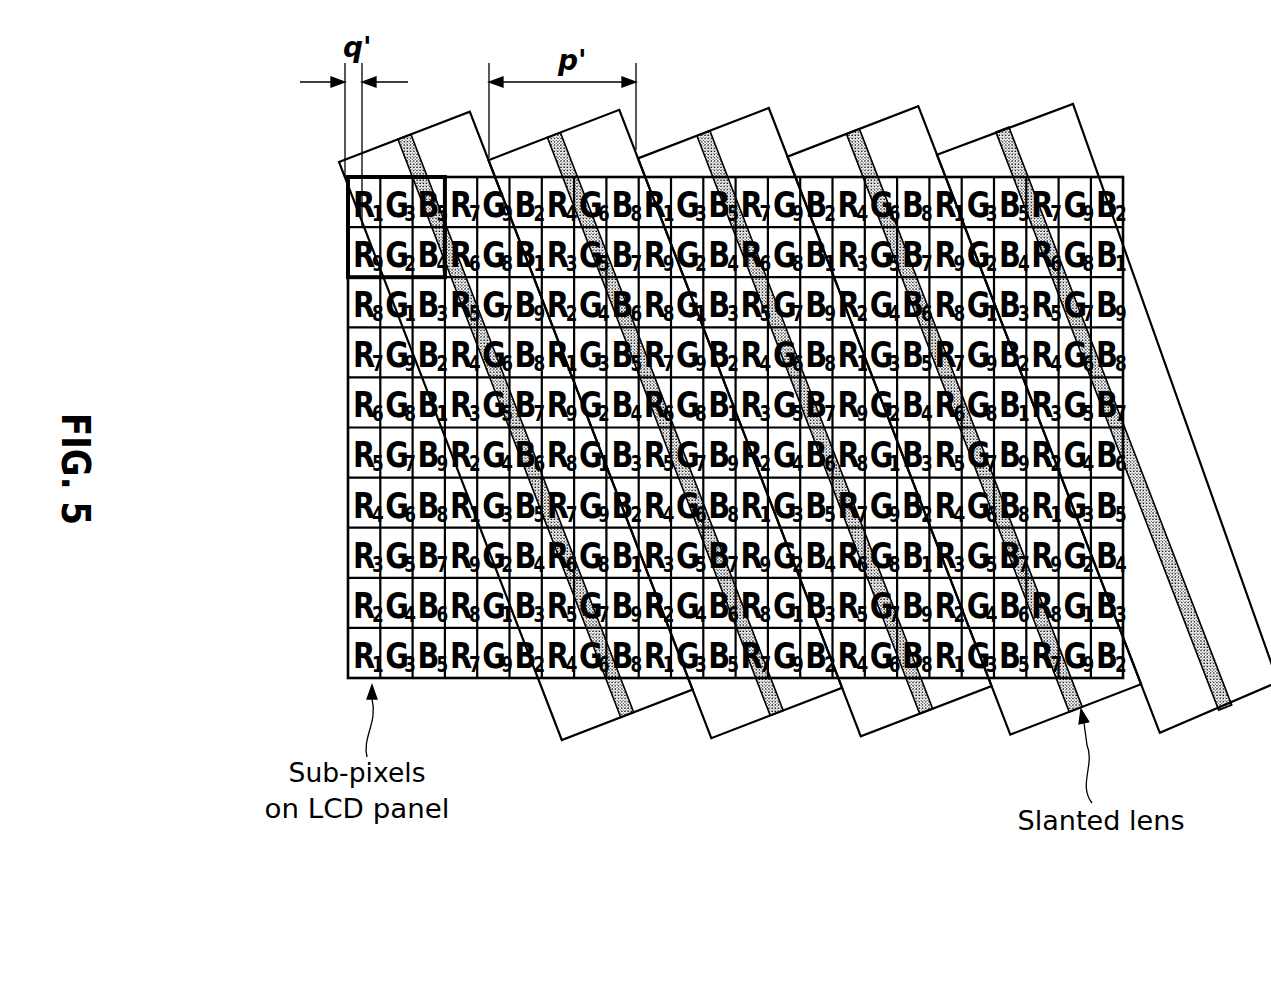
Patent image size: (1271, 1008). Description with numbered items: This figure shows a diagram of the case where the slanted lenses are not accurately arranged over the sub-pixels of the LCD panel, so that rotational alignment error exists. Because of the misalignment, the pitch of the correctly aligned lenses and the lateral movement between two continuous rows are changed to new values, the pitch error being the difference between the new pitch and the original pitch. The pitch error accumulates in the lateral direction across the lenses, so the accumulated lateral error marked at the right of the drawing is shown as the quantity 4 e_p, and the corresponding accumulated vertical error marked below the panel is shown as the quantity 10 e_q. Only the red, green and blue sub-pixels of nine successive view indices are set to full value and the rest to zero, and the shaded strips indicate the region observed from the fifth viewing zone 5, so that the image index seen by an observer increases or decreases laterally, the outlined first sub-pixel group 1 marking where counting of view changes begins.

The pixel (group of sub-pixels) 1 is at (396, 227).
The 4e_p lens pitch dimension 4 is at (985, 78).
The region observed from 5th viewing zone 5 is at (1046, 691).
The 10e_q sub-pixel width dimension 10 is at (520, 678).